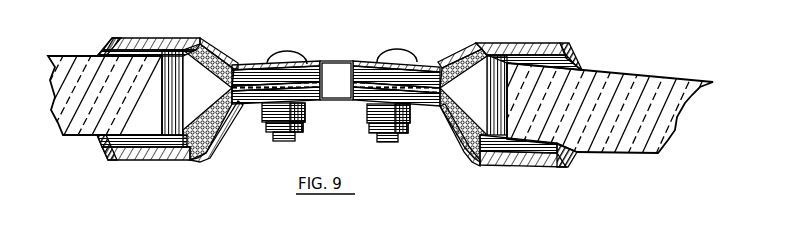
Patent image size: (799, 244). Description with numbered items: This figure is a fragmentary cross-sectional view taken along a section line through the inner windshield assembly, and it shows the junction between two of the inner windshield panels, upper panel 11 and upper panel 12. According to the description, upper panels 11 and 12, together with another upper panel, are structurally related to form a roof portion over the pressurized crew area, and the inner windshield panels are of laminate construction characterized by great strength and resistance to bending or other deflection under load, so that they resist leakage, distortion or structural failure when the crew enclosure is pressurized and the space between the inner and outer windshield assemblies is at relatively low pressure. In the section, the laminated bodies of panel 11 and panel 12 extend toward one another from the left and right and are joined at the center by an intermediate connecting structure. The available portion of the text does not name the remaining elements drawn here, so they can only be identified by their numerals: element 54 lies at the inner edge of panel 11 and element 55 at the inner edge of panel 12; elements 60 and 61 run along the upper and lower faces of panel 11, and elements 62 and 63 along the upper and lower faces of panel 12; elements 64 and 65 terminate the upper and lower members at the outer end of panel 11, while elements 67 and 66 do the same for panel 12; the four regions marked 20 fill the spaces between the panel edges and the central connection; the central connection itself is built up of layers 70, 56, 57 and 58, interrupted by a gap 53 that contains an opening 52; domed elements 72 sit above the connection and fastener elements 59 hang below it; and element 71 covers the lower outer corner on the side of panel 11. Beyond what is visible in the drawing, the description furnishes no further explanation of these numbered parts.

The upper panel 11 is at (53, 107).
The upper panel 12 is at (682, 80).
The filler material 20 is at (210, 44).
The opening 52 is at (325, 101).
The gap 53 is at (342, 62).
The edge strip of first panel 54 is at (176, 48).
The edge strip of second panel 55 is at (500, 55).
The intermediate layer 56 is at (305, 70).
The lower connector laminate 57 is at (258, 106).
The intermediate layer of second connector part 58 is at (420, 85).
The nut 59 is at (293, 128).
The upper frame member of first panel 60 is at (137, 38).
The lower frame member of first panel 61 is at (152, 160).
The upper frame member of second panel 62 is at (537, 53).
The lower frame member of second panel 63 is at (522, 166).
The upper end cap of first panel frame 64 is at (101, 47).
The lower end cap of first panel frame 65 is at (103, 143).
The lower end cap of second panel frame 66 is at (570, 160).
The upper end cap of second panel frame 67 is at (573, 55).
The upper connector laminate 70 is at (248, 65).
The outer cover sheet 71 is at (203, 159).
The bolt head 72 is at (272, 53).